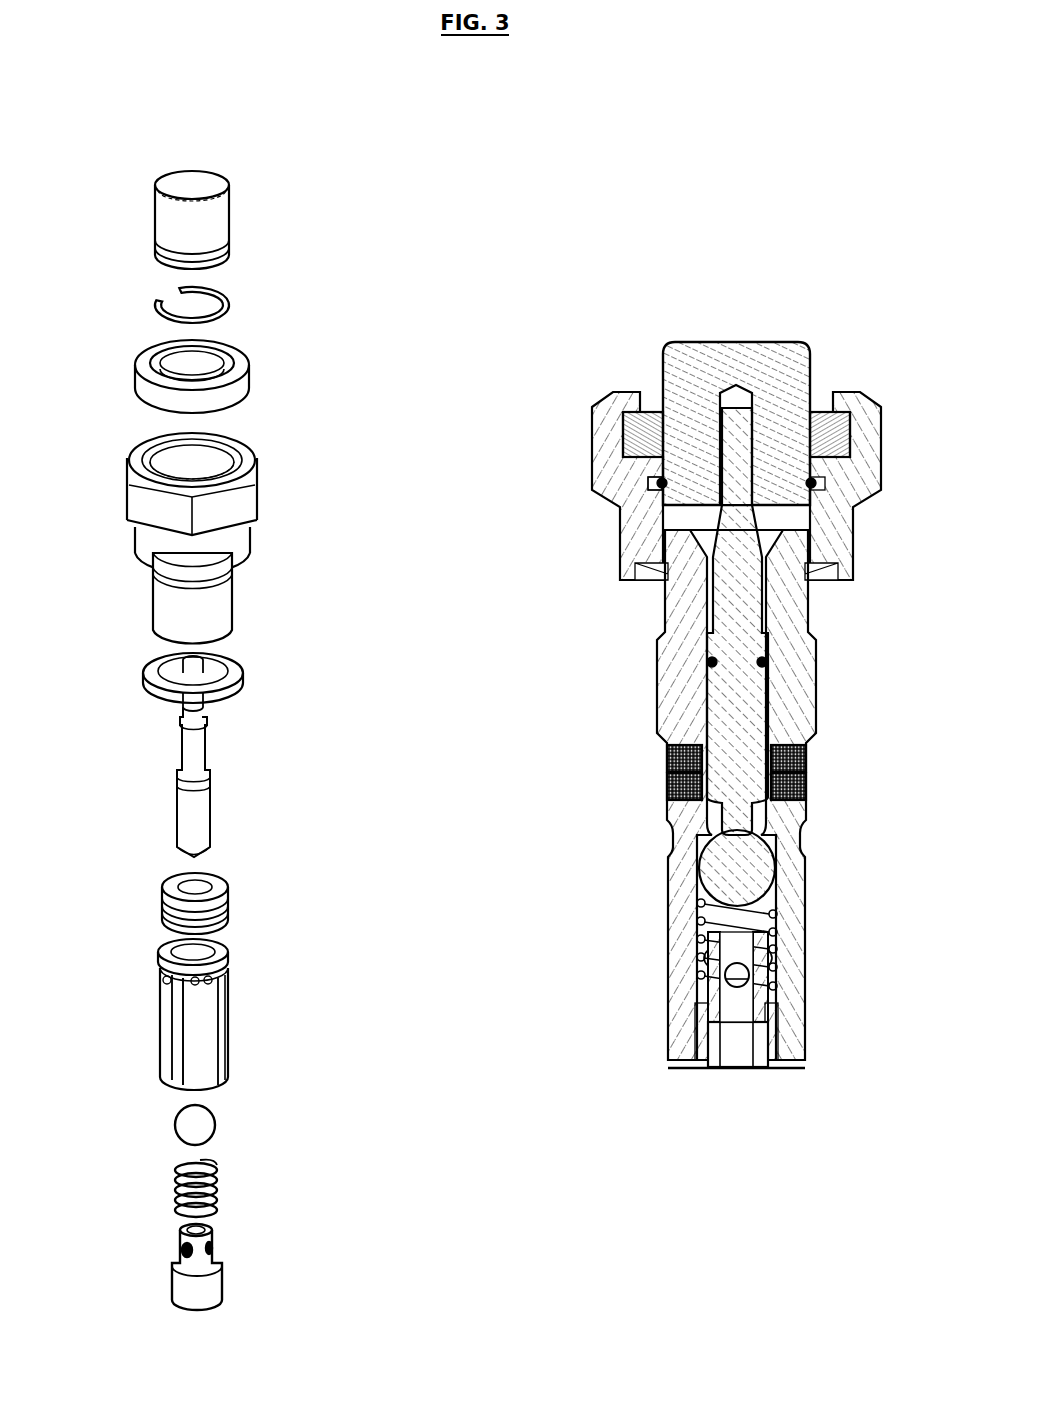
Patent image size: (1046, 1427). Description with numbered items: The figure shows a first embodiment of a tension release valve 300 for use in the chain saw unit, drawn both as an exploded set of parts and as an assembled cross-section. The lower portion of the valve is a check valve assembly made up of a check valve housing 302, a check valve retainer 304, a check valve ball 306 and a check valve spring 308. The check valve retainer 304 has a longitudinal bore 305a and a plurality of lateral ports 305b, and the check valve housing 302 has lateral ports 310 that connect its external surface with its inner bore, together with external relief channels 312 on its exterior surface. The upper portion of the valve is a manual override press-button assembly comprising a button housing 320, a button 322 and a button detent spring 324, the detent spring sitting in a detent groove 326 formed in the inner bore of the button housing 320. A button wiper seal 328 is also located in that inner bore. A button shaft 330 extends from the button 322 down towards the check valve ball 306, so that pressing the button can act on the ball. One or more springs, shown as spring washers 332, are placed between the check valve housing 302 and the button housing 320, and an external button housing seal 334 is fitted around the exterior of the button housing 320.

The tension release valve 300 is at (793, 299).
The check valve housing 302 is at (237, 1015).
The check valve retainer 304 is at (705, 1064).
The longitudinal bore 305a is at (737, 987).
The lateral ports 305b is at (737, 947).
The check valve ball 306 is at (727, 890).
The check valve spring 308 is at (694, 984).
The lateral ports 310 is at (163, 988).
The external relief channels 312 is at (177, 1038).
The button housing 320 is at (265, 495).
The button 322 is at (695, 340).
The button detent spring 324 is at (237, 307).
The detent groove 326 is at (643, 488).
The button wiper seal 328 is at (255, 375).
The button shaft 330 is at (218, 793).
The spring washers 332 is at (237, 890).
The external button housing seal 334 is at (255, 663).